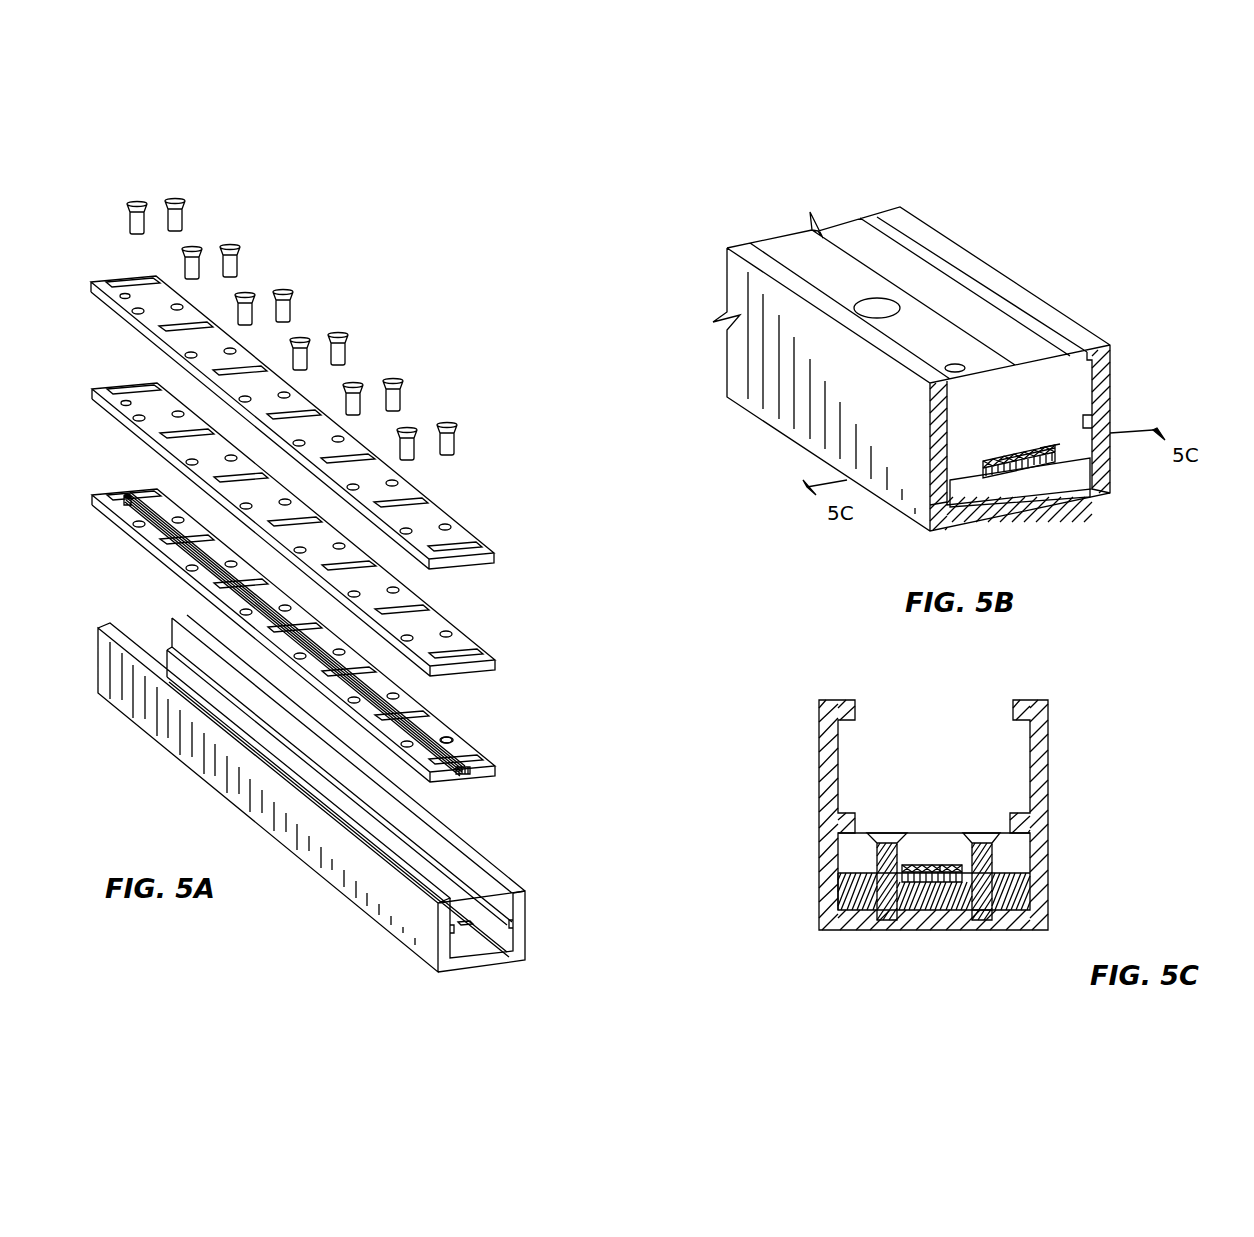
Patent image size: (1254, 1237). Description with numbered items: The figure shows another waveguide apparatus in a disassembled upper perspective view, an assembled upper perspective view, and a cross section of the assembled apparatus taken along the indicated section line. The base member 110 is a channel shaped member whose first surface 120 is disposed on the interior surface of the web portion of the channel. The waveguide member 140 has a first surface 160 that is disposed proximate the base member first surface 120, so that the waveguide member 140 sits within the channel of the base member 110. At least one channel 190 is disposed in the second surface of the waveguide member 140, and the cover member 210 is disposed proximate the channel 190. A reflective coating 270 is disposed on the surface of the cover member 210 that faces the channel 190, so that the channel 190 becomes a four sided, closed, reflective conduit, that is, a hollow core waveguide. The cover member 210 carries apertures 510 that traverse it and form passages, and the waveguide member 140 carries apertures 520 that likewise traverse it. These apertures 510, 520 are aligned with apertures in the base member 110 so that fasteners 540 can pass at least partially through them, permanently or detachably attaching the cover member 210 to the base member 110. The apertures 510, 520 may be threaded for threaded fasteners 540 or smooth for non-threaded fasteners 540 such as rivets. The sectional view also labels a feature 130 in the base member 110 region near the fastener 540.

In FIG. 5A, the base member 110 is at (505, 968).
In FIG. 5B, the base member 110 is at (1110, 365).
In FIG. 5C, the base member 110 is at (1048, 862).
In FIG. 5B, the first surface 120 is at (922, 500).
In FIG. 5C, the first surface 120 is at (843, 890).
In FIG. 5A, the locating feature 130 is at (465, 922).
In FIG. 5C, the locating feature 130 is at (982, 920).
In FIG. 5A, the waveguide member 140 is at (497, 775).
In FIG. 5B, the waveguide member 140 is at (1037, 480).
In FIG. 5C, the waveguide member 140 is at (928, 898).
In FIG. 5B, the first surface 160 is at (1108, 497).
In FIG. 5C, the first surface 160 is at (872, 903).
In FIG. 5B, the channel 190 is at (1020, 457).
In FIG. 5C, the channel 190 is at (950, 862).
In FIG. 5A, the cover member 210 is at (496, 556).
In FIG. 5B, the cover member 210 is at (1092, 478).
In FIG. 5C, the cover member 210 is at (935, 848).
In FIG. 5B, the reflective coating 270 is at (1043, 447).
In FIG. 5C, the reflective coating 270 is at (963, 838).
In FIG. 5A, the apertures 510 is at (449, 524).
In FIG. 5C, the apertures 510 is at (1030, 857).
In FIG. 5A, the apertures 520 is at (448, 737).
In FIG. 5C, the apertures 520 is at (1010, 877).
In FIG. 5A, the fasteners 540 is at (457, 433).
In FIG. 5B, the fasteners 540 is at (877, 308).
In FIG. 5C, the fasteners 540 is at (982, 890).